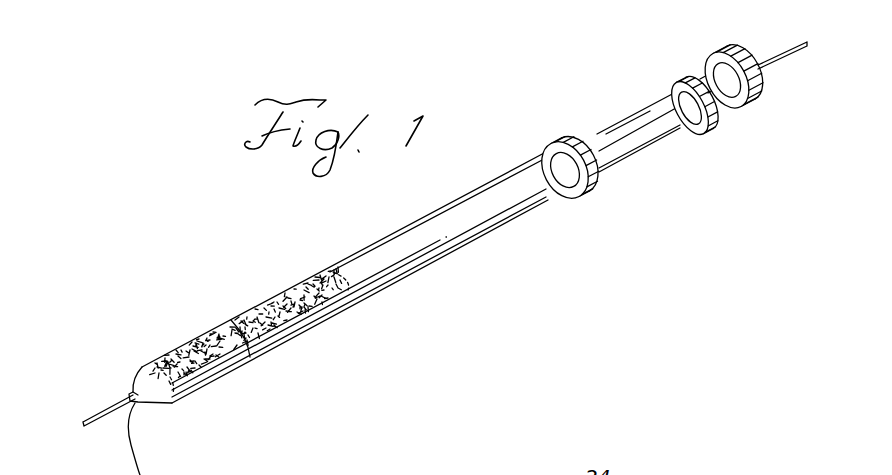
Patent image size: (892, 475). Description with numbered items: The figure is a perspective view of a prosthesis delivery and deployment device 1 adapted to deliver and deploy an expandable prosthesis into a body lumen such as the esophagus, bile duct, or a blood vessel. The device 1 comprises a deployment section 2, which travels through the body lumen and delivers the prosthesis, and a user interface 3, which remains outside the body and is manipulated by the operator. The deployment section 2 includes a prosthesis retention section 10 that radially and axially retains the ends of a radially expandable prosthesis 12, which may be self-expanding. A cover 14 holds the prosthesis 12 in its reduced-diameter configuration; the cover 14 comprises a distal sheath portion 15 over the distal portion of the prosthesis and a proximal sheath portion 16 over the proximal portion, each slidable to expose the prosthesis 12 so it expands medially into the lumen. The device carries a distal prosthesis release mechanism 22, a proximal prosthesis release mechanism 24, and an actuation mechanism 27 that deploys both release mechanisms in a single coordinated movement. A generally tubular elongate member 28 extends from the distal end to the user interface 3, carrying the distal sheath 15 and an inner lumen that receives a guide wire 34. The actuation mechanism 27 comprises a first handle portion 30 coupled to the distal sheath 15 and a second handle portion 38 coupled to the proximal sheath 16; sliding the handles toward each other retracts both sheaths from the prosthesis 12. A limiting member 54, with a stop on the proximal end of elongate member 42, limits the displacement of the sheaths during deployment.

The prosthesis delivery and deployment device 1 is at (490, 140).
The deployment section 2 is at (294, 393).
The user interface 3 is at (675, 168).
The prosthesis retention section 10 is at (230, 300).
The radially expandable prosthesis 12 is at (292, 282).
The cover 14 is at (197, 390).
The distal sheath portion 15 is at (177, 348).
The proximal sheath portion 16 is at (350, 308).
The distal prosthesis release mechanism 22 is at (753, 125).
The proximal prosthesis release mechanism 24 is at (589, 212).
The actuation mechanism 27 is at (620, 59).
The elongate member 28 is at (702, 77).
The first handle portion 30 is at (737, 50).
The guide wire 34 is at (100, 414).
The second handle portion 38 is at (557, 138).
The elongate member 42 is at (637, 148).
The limiting member 54 is at (708, 151).